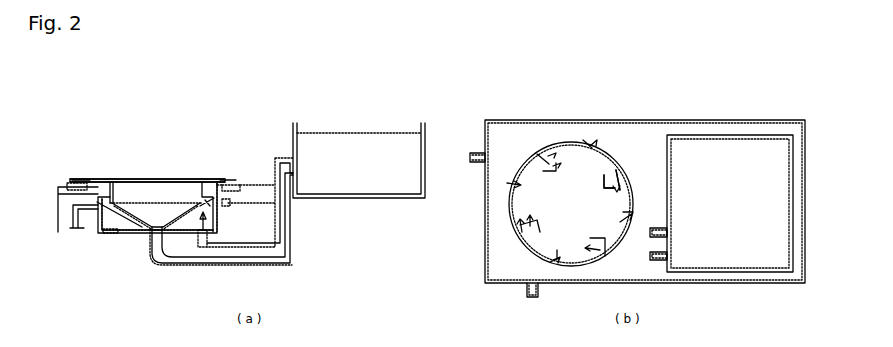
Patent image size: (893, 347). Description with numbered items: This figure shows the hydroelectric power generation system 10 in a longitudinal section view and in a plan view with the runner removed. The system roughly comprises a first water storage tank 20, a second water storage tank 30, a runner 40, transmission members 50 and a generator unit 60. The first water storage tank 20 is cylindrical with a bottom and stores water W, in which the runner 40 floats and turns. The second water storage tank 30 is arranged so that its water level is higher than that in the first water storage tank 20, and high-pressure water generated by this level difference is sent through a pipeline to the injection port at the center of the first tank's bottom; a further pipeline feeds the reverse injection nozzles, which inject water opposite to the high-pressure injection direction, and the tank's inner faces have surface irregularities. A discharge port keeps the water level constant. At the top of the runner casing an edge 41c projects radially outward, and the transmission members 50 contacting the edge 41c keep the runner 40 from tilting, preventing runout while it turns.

The hydroelectric power generation system 10 is at (217, 144).
The first water storage tank 20 is at (573, 226).
The second water storage tank 30 is at (353, 137).
The runner 40 is at (128, 178).
The edge 41c is at (212, 178).
The transmission members 50 is at (87, 181).
The generator unit 60 is at (76, 178).
The water W is at (101, 214).